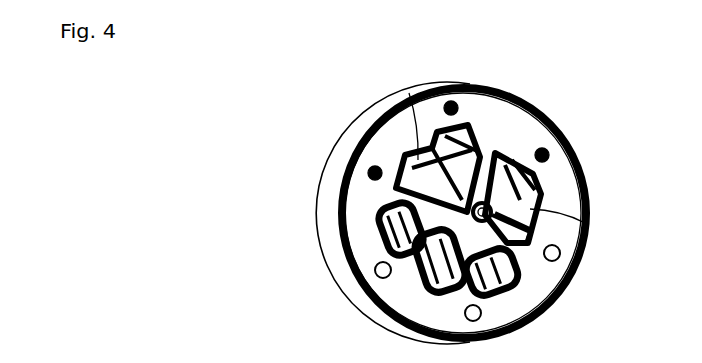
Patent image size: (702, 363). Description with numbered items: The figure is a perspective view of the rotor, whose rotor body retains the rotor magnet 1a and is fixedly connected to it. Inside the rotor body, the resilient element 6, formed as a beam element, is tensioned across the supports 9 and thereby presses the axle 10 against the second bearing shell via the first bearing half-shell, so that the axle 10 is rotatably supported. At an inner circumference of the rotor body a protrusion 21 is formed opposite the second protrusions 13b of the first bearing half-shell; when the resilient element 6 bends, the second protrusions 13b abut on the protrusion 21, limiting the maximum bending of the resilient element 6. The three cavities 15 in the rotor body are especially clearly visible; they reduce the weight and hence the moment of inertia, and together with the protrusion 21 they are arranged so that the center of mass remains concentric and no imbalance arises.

The rotor magnet 1a is at (322, 209).
The resilient element 6 is at (538, 200).
The supports 9 is at (410, 112).
The axle 10 is at (527, 250).
The second protrusions 13b is at (500, 152).
The cavities 15 is at (428, 290).
The protrusion 21 is at (491, 153).